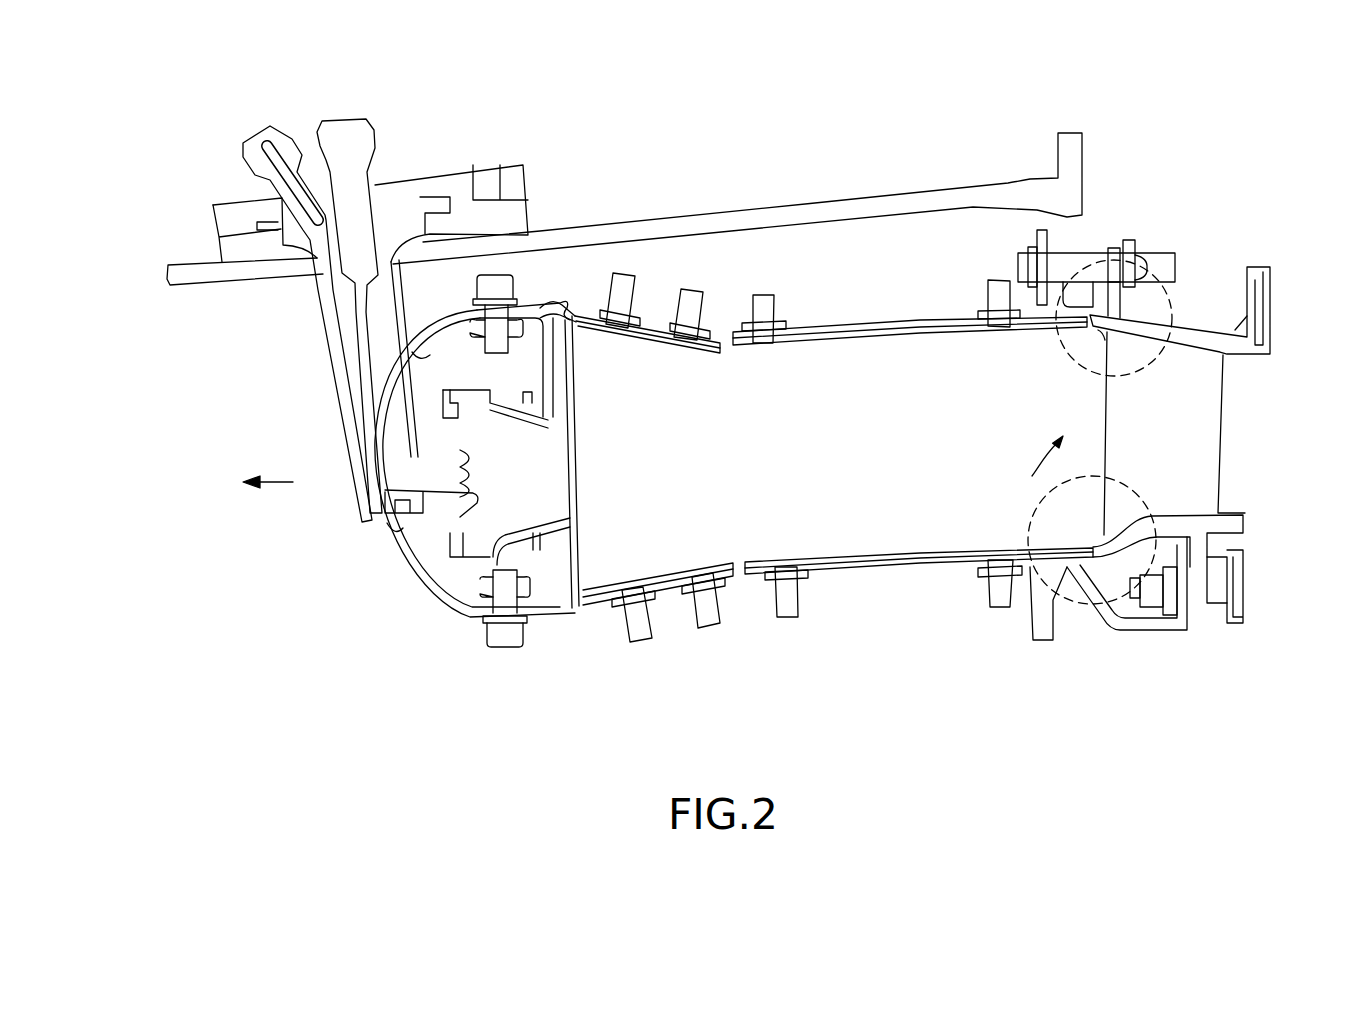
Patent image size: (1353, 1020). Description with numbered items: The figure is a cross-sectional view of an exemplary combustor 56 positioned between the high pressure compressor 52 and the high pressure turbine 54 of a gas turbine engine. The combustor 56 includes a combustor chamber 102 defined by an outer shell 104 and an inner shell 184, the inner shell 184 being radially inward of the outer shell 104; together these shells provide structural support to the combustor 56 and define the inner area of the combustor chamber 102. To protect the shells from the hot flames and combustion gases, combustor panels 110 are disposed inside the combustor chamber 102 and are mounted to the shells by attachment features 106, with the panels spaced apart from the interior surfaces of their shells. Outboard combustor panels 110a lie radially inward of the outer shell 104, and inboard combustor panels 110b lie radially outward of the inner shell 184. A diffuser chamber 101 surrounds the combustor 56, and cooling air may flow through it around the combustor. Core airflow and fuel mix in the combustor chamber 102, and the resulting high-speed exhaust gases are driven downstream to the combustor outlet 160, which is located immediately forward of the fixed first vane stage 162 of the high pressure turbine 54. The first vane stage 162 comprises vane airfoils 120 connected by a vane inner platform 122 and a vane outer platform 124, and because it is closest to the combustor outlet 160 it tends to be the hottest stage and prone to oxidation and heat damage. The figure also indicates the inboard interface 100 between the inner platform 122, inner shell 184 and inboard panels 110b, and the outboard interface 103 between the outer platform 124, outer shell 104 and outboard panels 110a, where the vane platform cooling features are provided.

The high pressure compressor 52 is at (282, 481).
The high pressure turbine 54 is at (1261, 441).
The combustor 56 is at (940, 232).
The inboard interface 100 is at (1080, 607).
The diffuser chamber 101 is at (849, 264).
The combustor chamber 102 is at (843, 453).
The outboard interface 103 is at (1093, 263).
The outer shell 104 is at (900, 327).
The attachment features 106 is at (638, 297).
The combustor panels 110 is at (802, 360).
The outboard combustor panels 110a is at (987, 338).
The inboard combustor panels 110b is at (955, 552).
The vane airfoils 120 is at (1193, 441).
The vane inner platform 122 is at (1133, 513).
The vane outer platform 124 is at (1143, 340).
The combustor outlet 160 is at (1036, 471).
The first vane stage 162 is at (1196, 285).
The inner shell 184 is at (893, 573).